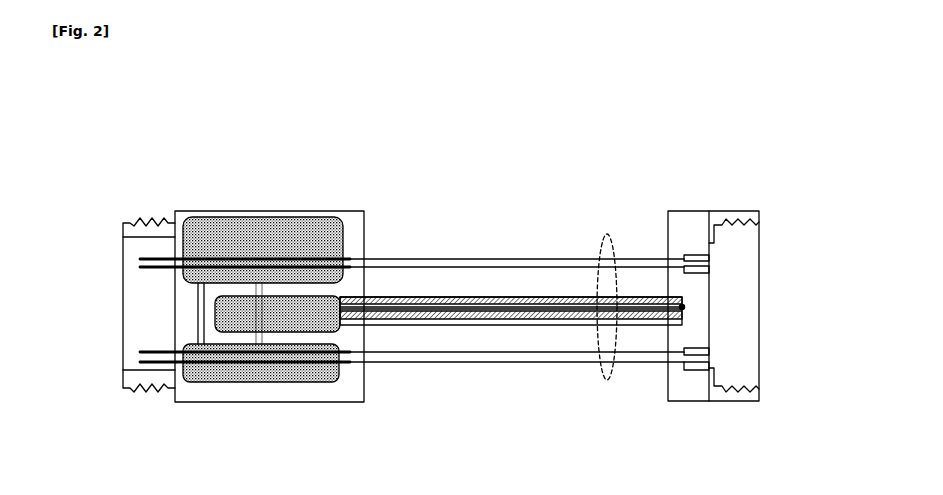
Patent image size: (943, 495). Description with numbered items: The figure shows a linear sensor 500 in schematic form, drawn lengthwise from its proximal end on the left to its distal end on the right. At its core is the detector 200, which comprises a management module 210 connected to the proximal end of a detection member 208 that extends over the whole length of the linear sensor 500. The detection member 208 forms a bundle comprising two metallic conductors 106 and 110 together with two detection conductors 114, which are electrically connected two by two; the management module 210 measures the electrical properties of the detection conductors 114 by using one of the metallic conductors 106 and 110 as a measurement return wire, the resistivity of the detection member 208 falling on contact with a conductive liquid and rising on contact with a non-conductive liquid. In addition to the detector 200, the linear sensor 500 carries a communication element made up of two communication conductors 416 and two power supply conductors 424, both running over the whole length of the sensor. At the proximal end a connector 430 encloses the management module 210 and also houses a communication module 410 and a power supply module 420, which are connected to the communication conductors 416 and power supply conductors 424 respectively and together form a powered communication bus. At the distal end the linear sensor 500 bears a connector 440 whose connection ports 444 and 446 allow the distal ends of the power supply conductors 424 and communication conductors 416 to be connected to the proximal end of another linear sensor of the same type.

The linear sensor 500 is at (251, 90).
The connector 430 is at (182, 216).
The power supply module 420 is at (215, 224).
The communication module 410 is at (235, 372).
The management module 210 is at (300, 305).
The detector 200 is at (512, 209).
The detection conductors 114 is at (383, 305).
The metallic conductor 110 is at (427, 310).
The metallic conductor 106 is at (477, 322).
The power supply conductors 424 is at (570, 253).
The communication conductors 416 is at (487, 362).
The detection member 208 is at (605, 382).
The connector 440 is at (683, 232).
The connection port 444 is at (714, 262).
The connection port 446 is at (721, 353).